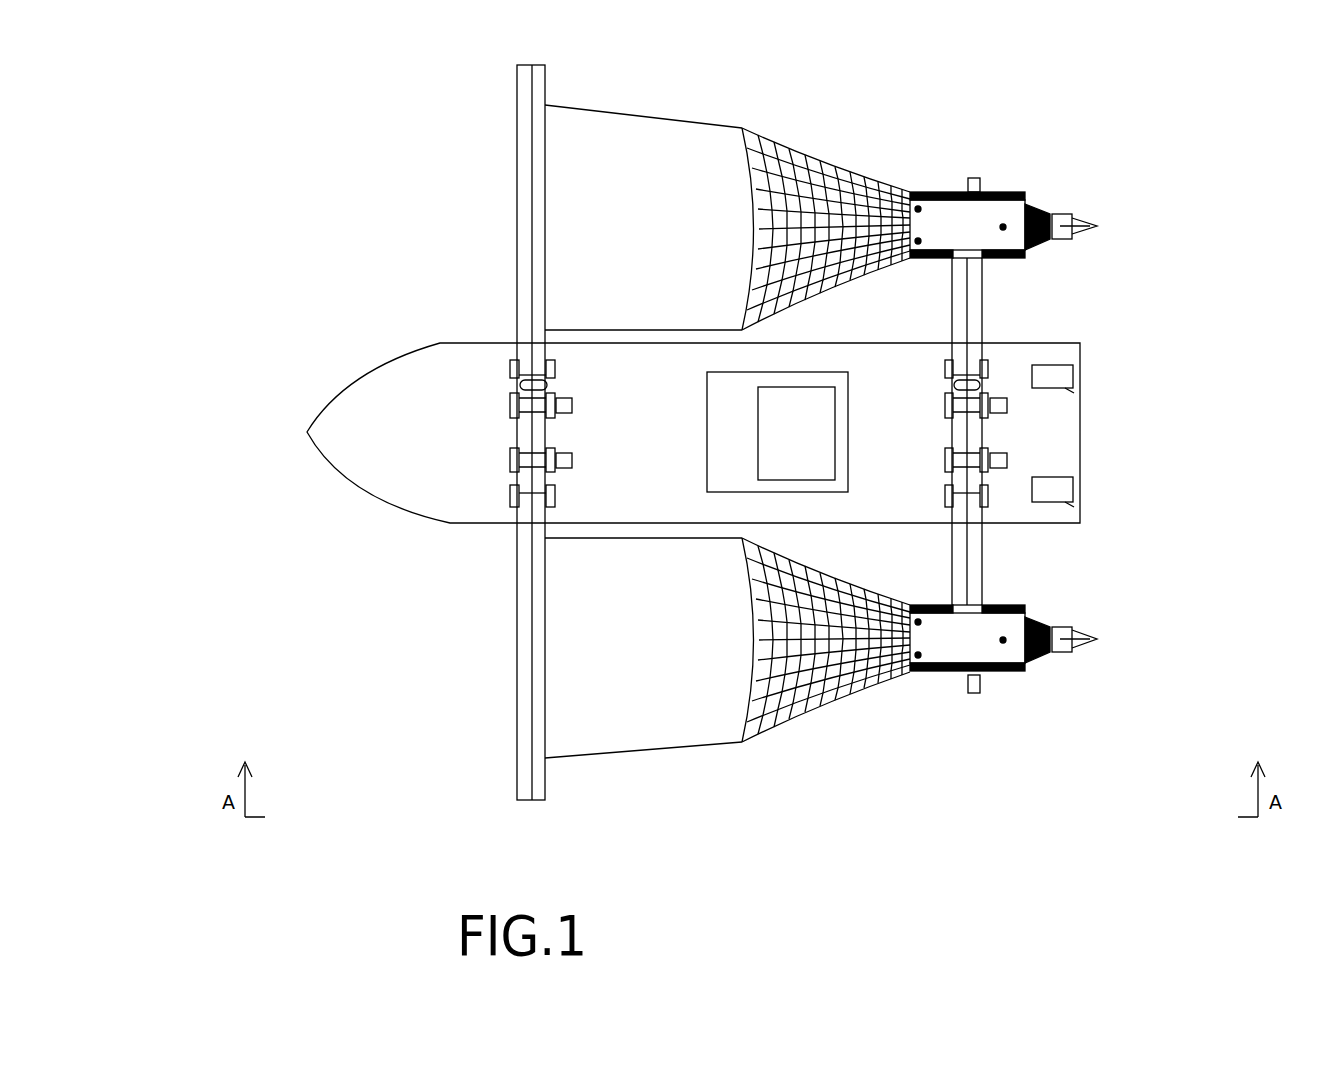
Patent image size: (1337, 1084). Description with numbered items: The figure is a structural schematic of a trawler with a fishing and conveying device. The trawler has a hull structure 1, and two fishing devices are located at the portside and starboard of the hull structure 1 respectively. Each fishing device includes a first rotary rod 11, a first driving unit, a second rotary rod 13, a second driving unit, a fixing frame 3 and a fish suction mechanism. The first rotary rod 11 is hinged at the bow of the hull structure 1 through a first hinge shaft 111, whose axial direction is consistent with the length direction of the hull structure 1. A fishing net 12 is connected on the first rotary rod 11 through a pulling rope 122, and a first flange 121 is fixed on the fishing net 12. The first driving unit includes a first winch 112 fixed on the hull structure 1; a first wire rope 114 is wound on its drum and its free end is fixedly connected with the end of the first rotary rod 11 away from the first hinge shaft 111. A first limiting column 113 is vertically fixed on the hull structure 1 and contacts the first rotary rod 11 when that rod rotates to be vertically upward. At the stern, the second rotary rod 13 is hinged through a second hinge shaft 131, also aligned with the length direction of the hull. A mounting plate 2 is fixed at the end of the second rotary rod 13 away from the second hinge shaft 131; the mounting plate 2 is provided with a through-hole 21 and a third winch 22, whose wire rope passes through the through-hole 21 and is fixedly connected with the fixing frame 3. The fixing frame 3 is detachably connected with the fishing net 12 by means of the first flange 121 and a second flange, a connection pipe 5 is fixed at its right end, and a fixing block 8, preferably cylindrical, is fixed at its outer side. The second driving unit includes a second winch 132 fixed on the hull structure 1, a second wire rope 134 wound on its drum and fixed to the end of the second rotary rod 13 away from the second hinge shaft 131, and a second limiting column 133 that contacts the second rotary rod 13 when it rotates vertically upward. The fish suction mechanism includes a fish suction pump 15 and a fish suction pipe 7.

The hull structure 1 is at (393, 378).
The first rotary rod 11 is at (518, 278).
The first hinge shaft 111 is at (548, 330).
The first winch 112 is at (510, 396).
The first limiting column 113 is at (560, 368).
The first wire rope 114 is at (532, 187).
The fishing net 12 is at (790, 140).
The first flange 121 is at (908, 198).
The pulling rope 122 is at (603, 110).
The second rotary rod 13 is at (985, 326).
The second hinge shaft 131 is at (948, 360).
The second winch 132 is at (1008, 405).
The second limiting column 133 is at (950, 383).
The second wire rope 134 is at (972, 303).
The fish suction pump 15 is at (1068, 498).
The mounting plate 2 is at (1022, 200).
The through-hole 21 is at (1003, 640).
The third winch 22 is at (1010, 641).
The fixing frame 3 is at (938, 676).
The connection pipe 5 is at (1077, 216).
The fish suction pipe 7 is at (1088, 641).
The fixing block 8 is at (974, 178).